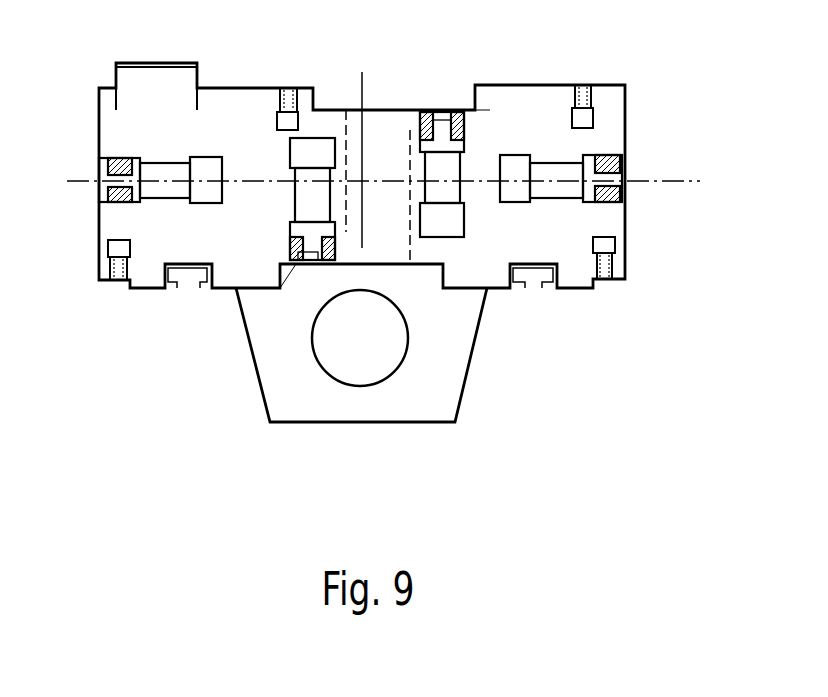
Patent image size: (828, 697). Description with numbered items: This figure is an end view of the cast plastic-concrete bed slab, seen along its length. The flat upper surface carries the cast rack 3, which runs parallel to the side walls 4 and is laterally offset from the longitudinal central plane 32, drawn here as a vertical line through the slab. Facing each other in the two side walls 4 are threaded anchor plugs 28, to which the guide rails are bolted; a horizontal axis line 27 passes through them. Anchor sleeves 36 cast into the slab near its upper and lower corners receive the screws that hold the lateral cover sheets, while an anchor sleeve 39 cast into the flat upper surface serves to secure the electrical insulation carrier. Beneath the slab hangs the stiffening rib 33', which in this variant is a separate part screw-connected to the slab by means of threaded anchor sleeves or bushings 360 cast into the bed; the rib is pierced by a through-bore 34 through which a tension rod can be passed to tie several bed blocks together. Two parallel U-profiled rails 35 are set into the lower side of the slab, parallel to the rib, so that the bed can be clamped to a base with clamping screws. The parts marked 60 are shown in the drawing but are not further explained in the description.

The rack 3 is at (163, 83).
The side walls 4 is at (93, 118).
The axis 27 is at (685, 178).
The threaded anchor plugs 28 is at (165, 187).
The longitudinal central plane 32 is at (363, 82).
The separate stiffening rib 33' is at (384, 355).
The through-bore 34 is at (375, 370).
The U-profiled rails 35 is at (198, 282).
The anchor sleeves 36 is at (573, 102).
The anchor sleeve 39 is at (278, 103).
The stop 60 is at (475, 100).
The threaded anchor sleeves or bushings 360 is at (302, 198).